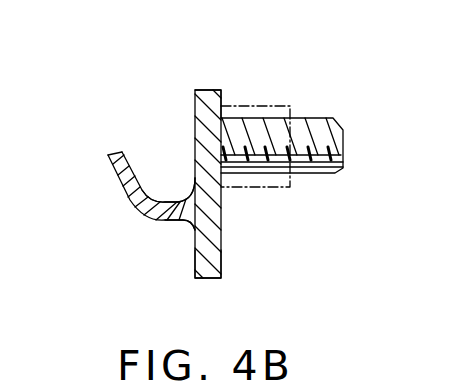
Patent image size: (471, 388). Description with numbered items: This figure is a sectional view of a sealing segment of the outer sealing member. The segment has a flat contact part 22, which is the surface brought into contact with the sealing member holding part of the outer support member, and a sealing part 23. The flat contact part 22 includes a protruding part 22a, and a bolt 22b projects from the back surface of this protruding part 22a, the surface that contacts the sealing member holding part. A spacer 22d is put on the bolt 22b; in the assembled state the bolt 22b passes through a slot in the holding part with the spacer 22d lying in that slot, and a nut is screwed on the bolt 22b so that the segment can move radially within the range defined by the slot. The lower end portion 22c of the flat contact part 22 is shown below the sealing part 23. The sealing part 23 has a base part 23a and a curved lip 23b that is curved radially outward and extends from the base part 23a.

The flat contact part 22 is at (221, 238).
The protruding part 22a is at (205, 88).
The bolt 22b is at (326, 125).
The lower end portion 22c is at (192, 258).
The spacer 22d is at (253, 102).
The sealing part 23 is at (122, 188).
The base part 23a is at (192, 227).
The curved lip 23b is at (168, 198).